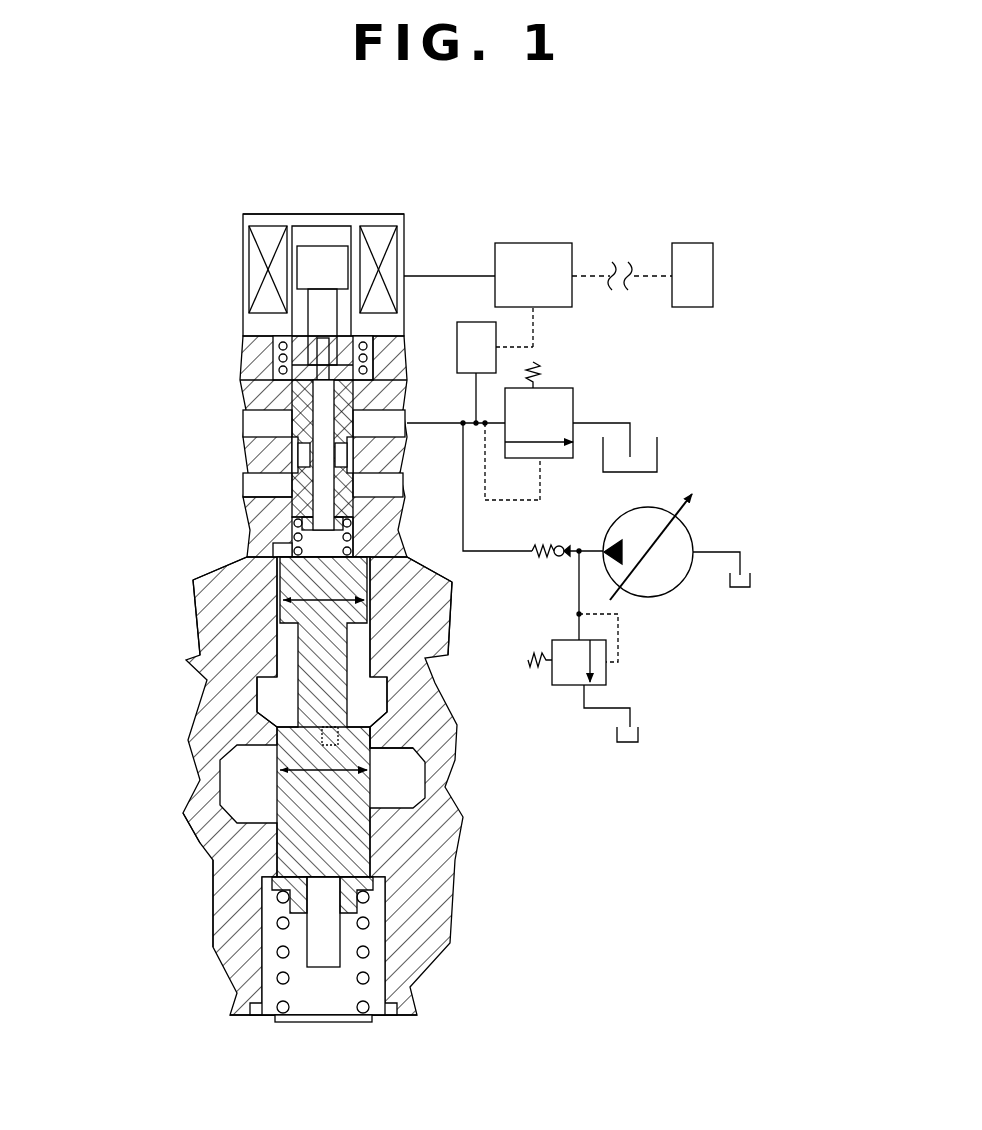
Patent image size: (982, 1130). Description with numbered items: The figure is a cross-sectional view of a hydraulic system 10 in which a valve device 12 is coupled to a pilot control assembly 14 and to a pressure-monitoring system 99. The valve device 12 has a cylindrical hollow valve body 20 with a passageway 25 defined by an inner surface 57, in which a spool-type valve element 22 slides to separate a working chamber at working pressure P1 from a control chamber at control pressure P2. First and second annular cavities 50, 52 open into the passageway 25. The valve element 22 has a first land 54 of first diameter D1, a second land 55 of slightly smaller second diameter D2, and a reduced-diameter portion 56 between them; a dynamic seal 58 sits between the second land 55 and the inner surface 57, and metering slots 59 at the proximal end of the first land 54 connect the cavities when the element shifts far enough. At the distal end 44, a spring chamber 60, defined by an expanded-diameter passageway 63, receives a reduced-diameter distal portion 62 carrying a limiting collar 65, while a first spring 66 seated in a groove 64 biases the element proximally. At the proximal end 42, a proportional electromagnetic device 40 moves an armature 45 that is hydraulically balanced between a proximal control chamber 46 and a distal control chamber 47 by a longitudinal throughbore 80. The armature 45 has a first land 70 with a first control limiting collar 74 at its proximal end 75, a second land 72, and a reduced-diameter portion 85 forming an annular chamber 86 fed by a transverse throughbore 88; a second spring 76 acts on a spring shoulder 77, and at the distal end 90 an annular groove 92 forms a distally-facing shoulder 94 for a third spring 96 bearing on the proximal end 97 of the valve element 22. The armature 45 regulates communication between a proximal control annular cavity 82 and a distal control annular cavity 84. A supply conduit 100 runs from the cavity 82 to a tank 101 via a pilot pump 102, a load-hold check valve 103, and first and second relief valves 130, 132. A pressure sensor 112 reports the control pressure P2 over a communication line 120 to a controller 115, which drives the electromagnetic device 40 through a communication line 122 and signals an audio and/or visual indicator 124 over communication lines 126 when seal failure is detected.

The hydraulic system 10 is at (229, 140).
The valve device 12 is at (120, 767).
The pilot control assembly 14 is at (240, 259).
The valve body 20 is at (215, 830).
The valve element 22 is at (355, 845).
The passageway 25 is at (380, 695).
The proportional electromagnetic device 40 is at (390, 220).
The proximal end 42 is at (120, 269).
The distal end 44 is at (137, 945).
The armature 45 is at (260, 520).
The proximal control chamber 46 is at (275, 346).
The distal control chamber 47 is at (437, 567).
The first annular cavity 50 is at (240, 738).
The second annular cavity 52 is at (290, 645).
The first land 54 is at (370, 835).
The second land 55 is at (290, 600).
The reduced-diameter portion 56 is at (447, 638).
The inner surface 57 is at (265, 700).
The dynamic seal 58 is at (285, 605).
The metering slots 59 is at (440, 723).
The spring chamber 60 is at (415, 950).
The reduced-diameter distal portion 62 is at (285, 940).
The expanded-diameter passageway 63 is at (250, 1000).
The groove 64 is at (340, 1022).
The limiting collar 65 is at (370, 893).
The first spring 66 is at (282, 918).
The first land 70 is at (298, 398).
The second land 72 is at (249, 500).
The first control limiting collar 74 is at (345, 372).
The proximal end 75 is at (372, 398).
The second spring 76 is at (372, 340).
The spring shoulder 77 is at (296, 322).
The longitudinal throughbore 80 is at (350, 462).
The proximal control annular cavity 82 is at (250, 422).
The distal control annular cavity 84 is at (246, 470).
The reduced-diameter portion 85 is at (328, 452).
The annular chamber 86 is at (400, 477).
The transverse throughbore 88 is at (290, 460).
The distal end 90 is at (360, 540).
The annular groove 92 is at (292, 530).
The distally-facing shoulder 94 is at (360, 525).
The third spring 96 is at (275, 545).
The proximal end 97 is at (452, 582).
The pressure-monitoring system 99 is at (755, 352).
The supply conduit 100 is at (465, 518).
The tank 101 is at (658, 450).
The pilot pump 102 is at (700, 540).
The load-hold check valve 103 is at (548, 545).
The pressure sensor 112 is at (480, 322).
The controller 115 is at (533, 275).
The communication line 120 is at (535, 330).
The communication line 122 is at (440, 276).
The audio and/or visual indicator 124 is at (692, 275).
The communication lines 126 is at (598, 276).
The first relief valve 130 is at (608, 678).
The second relief valve 132 is at (517, 431).
The working pressure P1 is at (360, 706).
The control pressure P2 is at (366, 428).
The first diameter D1 is at (282, 790).
The second diameter D2 is at (367, 605).